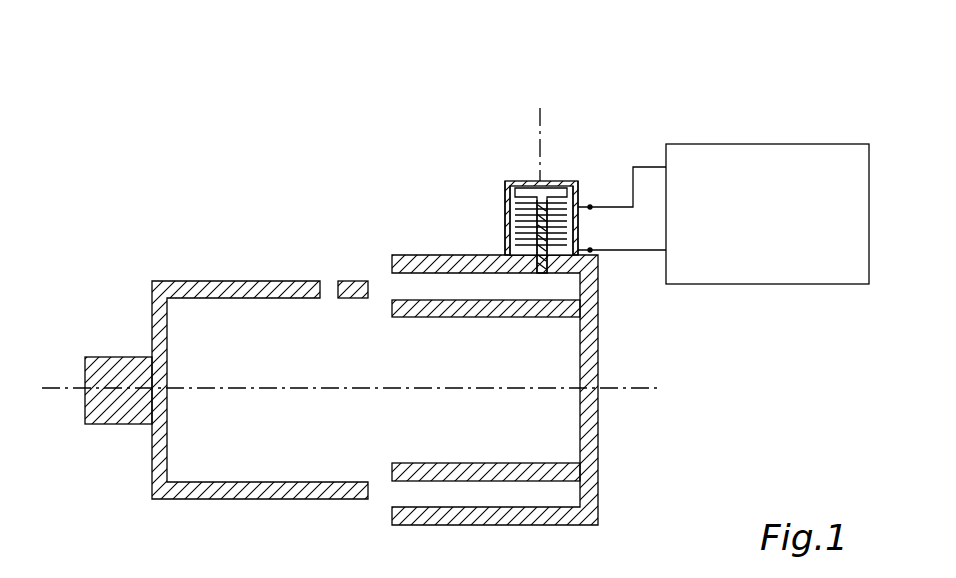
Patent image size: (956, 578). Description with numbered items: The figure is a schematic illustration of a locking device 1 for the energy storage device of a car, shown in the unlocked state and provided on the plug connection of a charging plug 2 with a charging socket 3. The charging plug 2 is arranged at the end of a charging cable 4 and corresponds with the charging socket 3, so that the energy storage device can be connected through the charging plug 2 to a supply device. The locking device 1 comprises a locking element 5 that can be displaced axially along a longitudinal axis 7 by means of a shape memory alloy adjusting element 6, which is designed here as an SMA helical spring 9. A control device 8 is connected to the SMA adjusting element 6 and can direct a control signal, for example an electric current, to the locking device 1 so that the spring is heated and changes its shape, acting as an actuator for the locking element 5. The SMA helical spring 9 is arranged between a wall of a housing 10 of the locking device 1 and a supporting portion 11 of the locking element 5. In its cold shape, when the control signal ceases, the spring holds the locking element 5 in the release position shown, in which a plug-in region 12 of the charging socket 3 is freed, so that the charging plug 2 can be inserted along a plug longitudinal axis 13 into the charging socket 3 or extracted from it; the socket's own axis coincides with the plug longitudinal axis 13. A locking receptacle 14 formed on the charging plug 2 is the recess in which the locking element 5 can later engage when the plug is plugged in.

The locking device 1 is at (528, 176).
The charging plug 2 is at (148, 503).
The charging socket 3 is at (600, 450).
The charging cable 4 is at (123, 357).
The locking element 5 is at (523, 186).
The shape memory alloy adjusting element 6 is at (510, 210).
The longitudinal axis 7 is at (540, 108).
The control device 8 is at (723, 214).
The SMA helical spring 9 is at (508, 235).
The housing 10 is at (505, 188).
The supporting portion 11 is at (568, 183).
The plug-in region 12 is at (402, 287).
The plug longitudinal axis 13 is at (63, 386).
The locking receptacle 14 is at (331, 290).